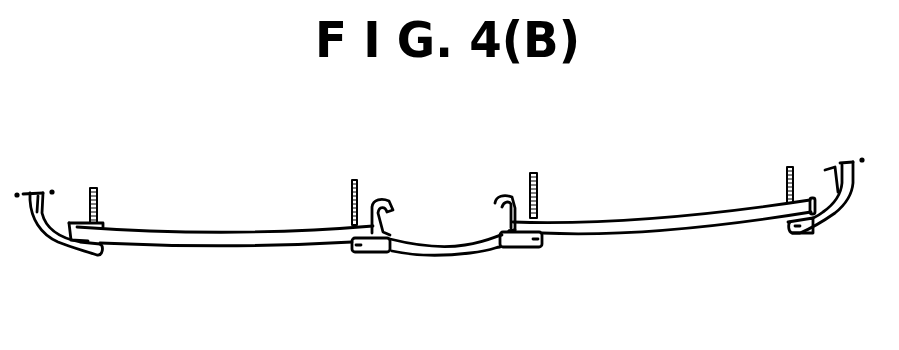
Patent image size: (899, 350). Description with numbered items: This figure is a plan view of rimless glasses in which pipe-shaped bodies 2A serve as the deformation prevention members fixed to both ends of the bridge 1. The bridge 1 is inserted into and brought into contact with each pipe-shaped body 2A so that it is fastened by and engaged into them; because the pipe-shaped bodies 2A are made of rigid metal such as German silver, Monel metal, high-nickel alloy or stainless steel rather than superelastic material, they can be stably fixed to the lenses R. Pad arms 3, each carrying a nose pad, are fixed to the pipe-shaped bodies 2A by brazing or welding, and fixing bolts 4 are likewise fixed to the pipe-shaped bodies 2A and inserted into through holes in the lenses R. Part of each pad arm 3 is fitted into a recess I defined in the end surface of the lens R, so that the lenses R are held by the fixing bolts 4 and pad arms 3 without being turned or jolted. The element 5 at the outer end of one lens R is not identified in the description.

The bridge 1 is at (440, 250).
The pipe-shaped body 2A is at (520, 248).
The pad arm 3 is at (492, 209).
The fixing bolt 4 is at (539, 181).
The recess I is at (521, 192).
The lens R is at (660, 222).
The hook end 5 is at (826, 223).